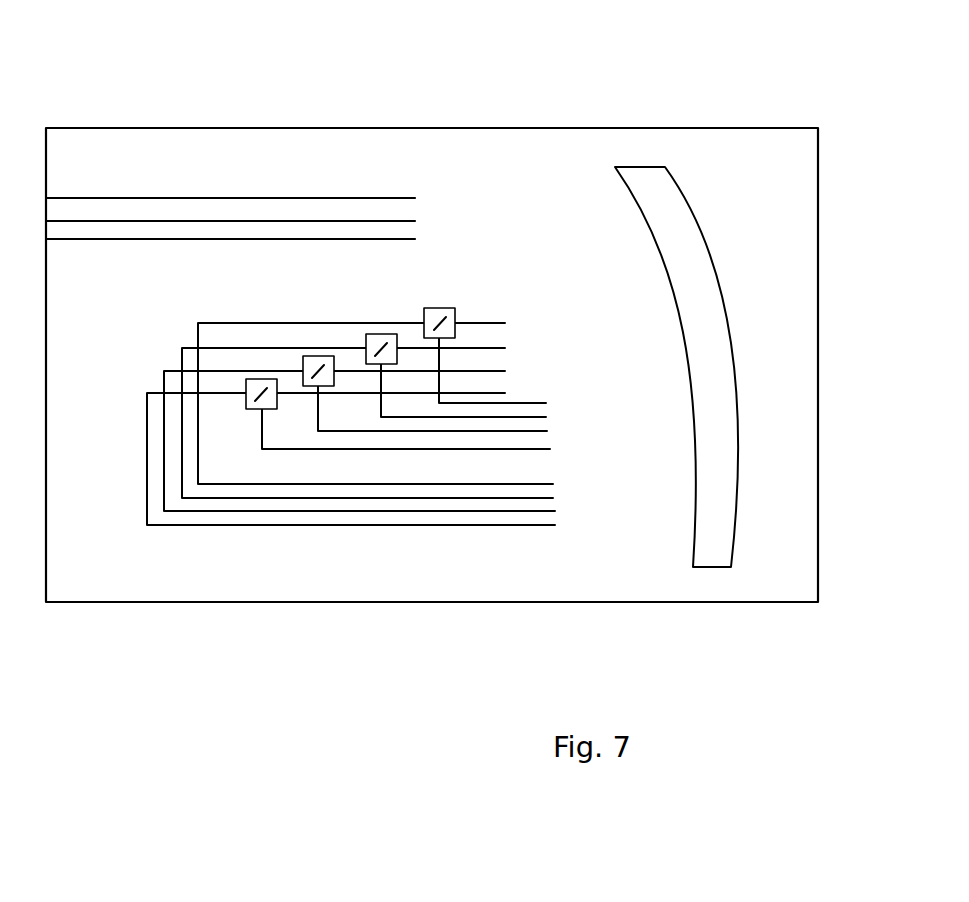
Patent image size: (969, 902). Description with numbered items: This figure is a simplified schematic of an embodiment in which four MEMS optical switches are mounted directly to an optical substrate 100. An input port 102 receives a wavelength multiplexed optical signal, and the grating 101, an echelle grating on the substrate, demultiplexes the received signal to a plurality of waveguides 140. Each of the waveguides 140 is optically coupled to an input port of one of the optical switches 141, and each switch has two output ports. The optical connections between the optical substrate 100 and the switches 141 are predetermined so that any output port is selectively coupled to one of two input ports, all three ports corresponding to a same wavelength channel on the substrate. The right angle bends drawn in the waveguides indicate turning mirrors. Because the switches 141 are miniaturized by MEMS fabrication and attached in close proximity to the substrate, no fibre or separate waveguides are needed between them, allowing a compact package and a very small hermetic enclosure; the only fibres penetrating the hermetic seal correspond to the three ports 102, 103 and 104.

The optical substrate 100 is at (762, 160).
The grating 101 is at (695, 247).
The input port 102 is at (46, 198).
The port 103 is at (46, 221).
The port 104 is at (46, 239).
The waveguides 140 is at (512, 315).
The optical switches 141 is at (430, 337).